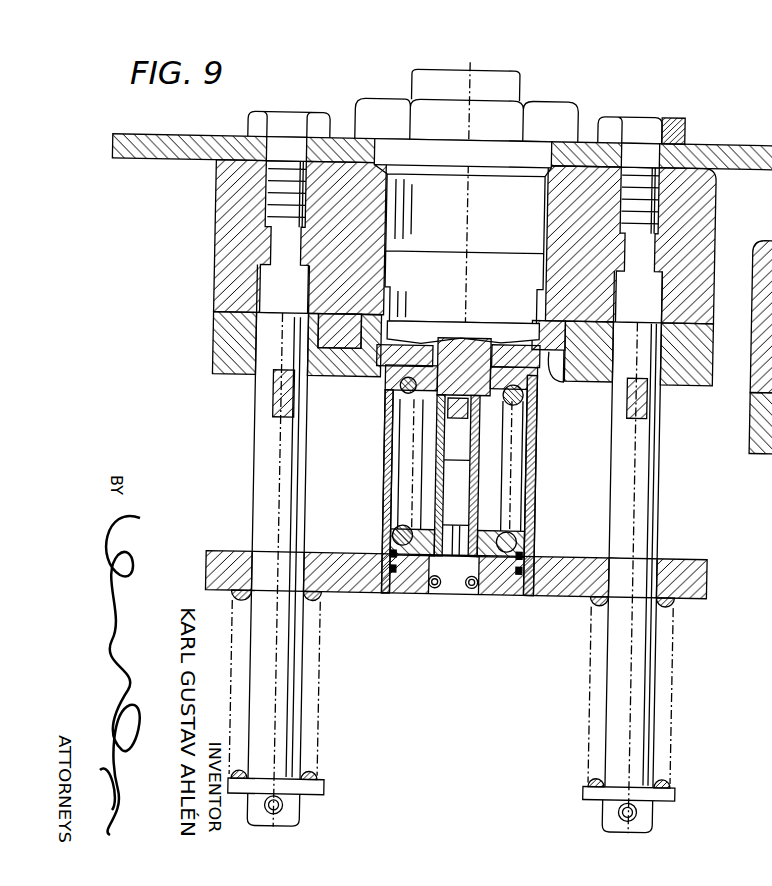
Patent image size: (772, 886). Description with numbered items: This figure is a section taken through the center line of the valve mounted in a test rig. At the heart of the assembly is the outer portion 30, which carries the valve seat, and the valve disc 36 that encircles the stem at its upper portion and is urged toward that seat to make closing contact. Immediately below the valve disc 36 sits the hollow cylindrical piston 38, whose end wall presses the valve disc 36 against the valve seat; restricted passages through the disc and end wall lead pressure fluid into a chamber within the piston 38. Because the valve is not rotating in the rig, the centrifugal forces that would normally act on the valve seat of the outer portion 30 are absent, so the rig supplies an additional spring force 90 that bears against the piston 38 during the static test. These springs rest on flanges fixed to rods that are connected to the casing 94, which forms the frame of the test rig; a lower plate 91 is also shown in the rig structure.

The outer portion 30 is at (384, 362).
The valve disc 36 is at (540, 357).
The hollow cylindrical piston 38 is at (538, 458).
The spring 90 is at (673, 663).
The lower plate 91 is at (683, 573).
The casing 94 is at (703, 243).